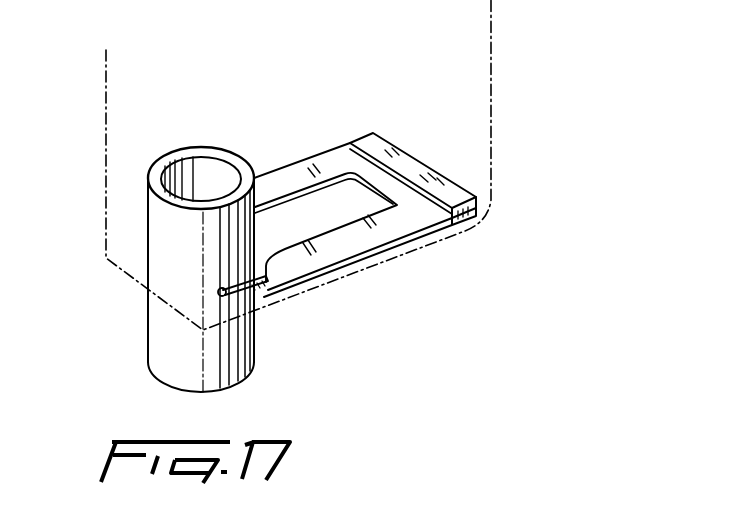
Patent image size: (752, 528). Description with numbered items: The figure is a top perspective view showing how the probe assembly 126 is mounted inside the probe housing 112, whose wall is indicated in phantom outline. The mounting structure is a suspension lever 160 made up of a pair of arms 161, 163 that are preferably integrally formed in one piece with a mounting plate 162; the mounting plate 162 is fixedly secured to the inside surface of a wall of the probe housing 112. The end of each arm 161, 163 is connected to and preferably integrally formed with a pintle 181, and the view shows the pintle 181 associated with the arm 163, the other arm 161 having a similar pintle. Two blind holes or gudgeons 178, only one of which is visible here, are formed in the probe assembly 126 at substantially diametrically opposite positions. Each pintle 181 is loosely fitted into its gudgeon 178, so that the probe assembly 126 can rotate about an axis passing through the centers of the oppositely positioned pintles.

The probe housing 112 is at (491, 139).
The probe assembly 126 is at (150, 354).
The suspension lever 160 is at (365, 192).
The arm 161 is at (324, 163).
The mounting plate 162 is at (405, 163).
The arm 163 is at (388, 226).
The blind hole or gudgeon 178 is at (218, 292).
The pintle 181 is at (264, 291).